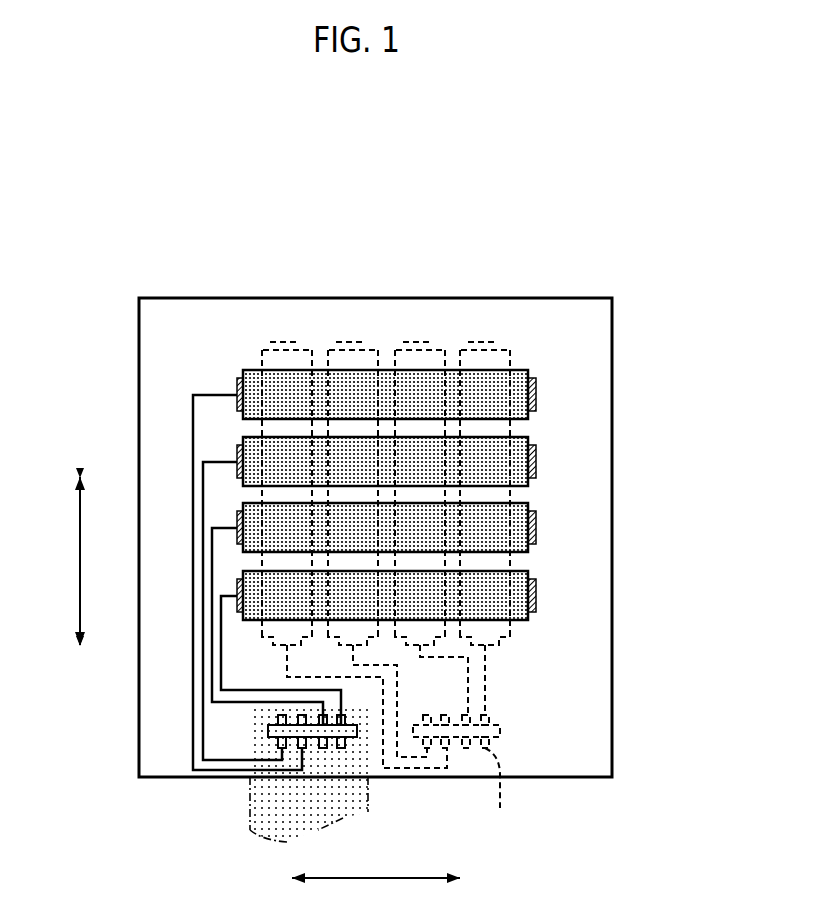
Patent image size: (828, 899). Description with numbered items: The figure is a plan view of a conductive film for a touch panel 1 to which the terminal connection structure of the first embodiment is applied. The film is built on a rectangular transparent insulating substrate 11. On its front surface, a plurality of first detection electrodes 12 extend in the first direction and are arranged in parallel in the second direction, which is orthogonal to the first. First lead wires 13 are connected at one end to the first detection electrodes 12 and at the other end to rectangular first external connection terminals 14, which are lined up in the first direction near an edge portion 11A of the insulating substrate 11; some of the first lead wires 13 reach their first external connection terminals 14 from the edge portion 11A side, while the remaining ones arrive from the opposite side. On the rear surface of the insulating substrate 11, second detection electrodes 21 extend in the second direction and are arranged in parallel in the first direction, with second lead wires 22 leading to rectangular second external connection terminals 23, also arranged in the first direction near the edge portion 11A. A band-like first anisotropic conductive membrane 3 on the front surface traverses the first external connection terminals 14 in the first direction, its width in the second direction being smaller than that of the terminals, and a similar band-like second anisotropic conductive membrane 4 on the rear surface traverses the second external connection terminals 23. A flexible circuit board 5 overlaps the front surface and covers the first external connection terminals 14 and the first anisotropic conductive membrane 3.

The conductive film for a touch panel 1 is at (555, 296).
The insulating substrate 11 is at (613, 420).
The edge portion 11A is at (383, 777).
The first detection electrodes 12 is at (243, 370).
The first lead wires 13 is at (191, 683).
The first external connection terminals 14 is at (255, 748).
The second detection electrodes 21 is at (260, 362).
The second lead wires 22 is at (488, 682).
The second external connection terminals 23 is at (500, 808).
The first anisotropic conductive membrane 3 is at (217, 774).
The second anisotropic conductive membrane 4 is at (546, 742).
The flexible circuit board 5 is at (248, 812).